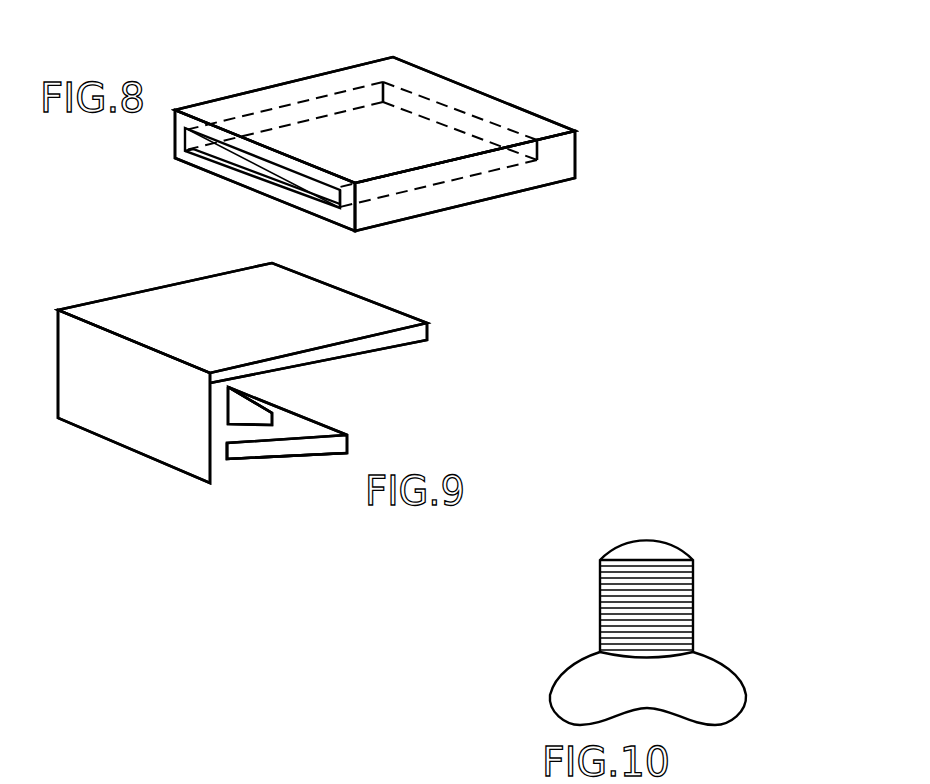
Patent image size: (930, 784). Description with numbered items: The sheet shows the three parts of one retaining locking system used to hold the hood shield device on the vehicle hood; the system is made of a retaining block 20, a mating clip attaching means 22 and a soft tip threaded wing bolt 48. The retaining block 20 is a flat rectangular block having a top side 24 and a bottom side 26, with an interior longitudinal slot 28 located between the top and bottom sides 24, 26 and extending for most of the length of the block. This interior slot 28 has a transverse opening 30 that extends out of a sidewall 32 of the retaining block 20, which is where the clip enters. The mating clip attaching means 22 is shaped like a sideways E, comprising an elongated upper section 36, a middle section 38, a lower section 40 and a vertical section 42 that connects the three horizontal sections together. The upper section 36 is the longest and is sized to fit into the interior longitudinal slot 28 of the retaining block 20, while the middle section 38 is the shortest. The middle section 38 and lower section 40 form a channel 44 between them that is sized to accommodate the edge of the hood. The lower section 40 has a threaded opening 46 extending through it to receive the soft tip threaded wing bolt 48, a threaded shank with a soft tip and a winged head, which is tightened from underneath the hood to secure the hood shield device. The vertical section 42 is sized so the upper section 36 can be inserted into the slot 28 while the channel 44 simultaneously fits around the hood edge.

In FIG. 8, the retaining block 20 is at (490, 57).
In FIG. 8, the top side 24 is at (527, 122).
In FIG. 8, the bottom side 26 is at (513, 192).
In FIG. 8, the interior longitudinal slot 28 is at (322, 193).
In FIG. 8, the transverse opening 30 is at (262, 170).
In FIG. 8, the sidewall 32 is at (200, 168).
In FIG. 9, the mating clip attaching means 22 is at (166, 492).
In FIG. 9, the elongated upper section 36 is at (163, 303).
In FIG. 9, the middle section 38 is at (250, 412).
In FIG. 9, the lower section 40 is at (300, 458).
In FIG. 9, the vertical section 42 is at (102, 422).
In FIG. 9, the channel 44 is at (246, 456).
In FIG. 9, the threaded opening 46 is at (295, 432).
In FIG. 10, the soft tip threaded wing bolt 48 is at (688, 528).